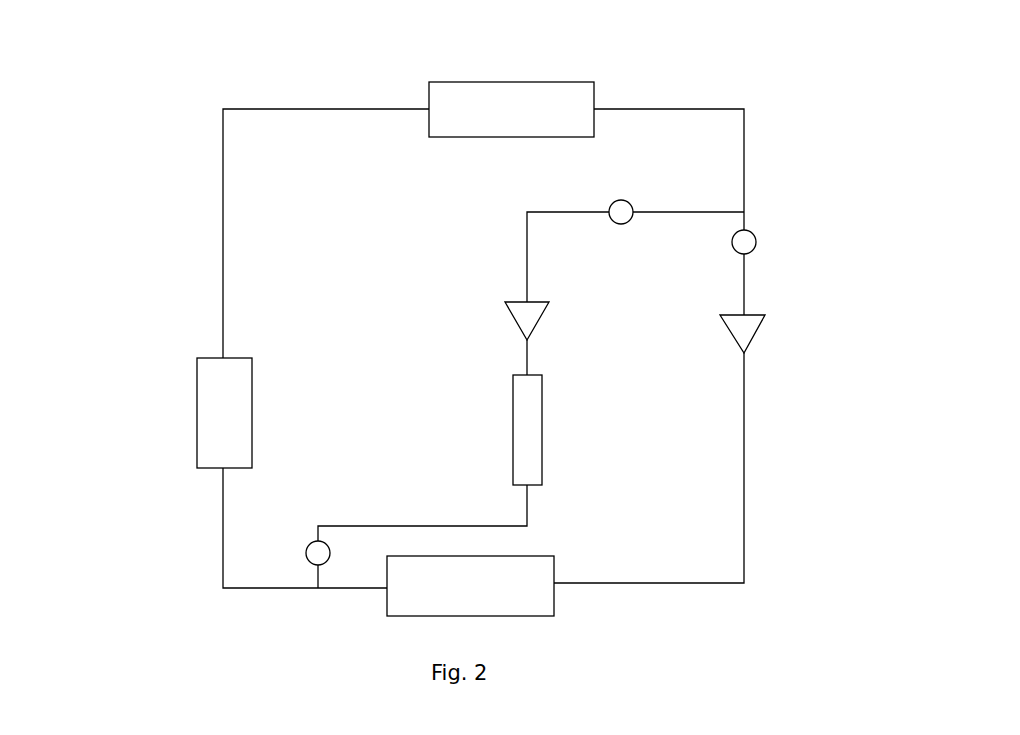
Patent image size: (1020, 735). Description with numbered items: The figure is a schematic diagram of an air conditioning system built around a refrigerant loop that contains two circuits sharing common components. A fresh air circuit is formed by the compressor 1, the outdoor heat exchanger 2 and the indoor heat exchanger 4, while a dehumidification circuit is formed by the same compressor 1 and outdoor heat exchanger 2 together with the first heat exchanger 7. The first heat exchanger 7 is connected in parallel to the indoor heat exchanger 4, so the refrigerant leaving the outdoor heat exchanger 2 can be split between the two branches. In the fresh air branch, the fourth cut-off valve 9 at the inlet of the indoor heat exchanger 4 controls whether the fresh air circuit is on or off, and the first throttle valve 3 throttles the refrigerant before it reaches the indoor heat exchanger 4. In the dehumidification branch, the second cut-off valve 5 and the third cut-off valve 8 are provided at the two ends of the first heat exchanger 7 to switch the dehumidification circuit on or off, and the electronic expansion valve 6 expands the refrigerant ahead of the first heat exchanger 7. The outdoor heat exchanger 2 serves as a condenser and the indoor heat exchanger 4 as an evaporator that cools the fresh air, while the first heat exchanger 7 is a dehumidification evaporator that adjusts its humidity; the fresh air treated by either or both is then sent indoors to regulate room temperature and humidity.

The compressor 1 is at (151, 413).
The outdoor heat exchanger 2 is at (441, 77).
The first throttle valve 3 is at (820, 298).
The indoor heat exchanger 4 is at (550, 595).
The second cut-off valve 5 is at (645, 186).
The electronic expansion valve 6 is at (599, 310).
The first heat exchanger 7 is at (602, 430).
The third cut-off valve 8 is at (280, 538).
The fourth cut-off valve 9 is at (809, 214).